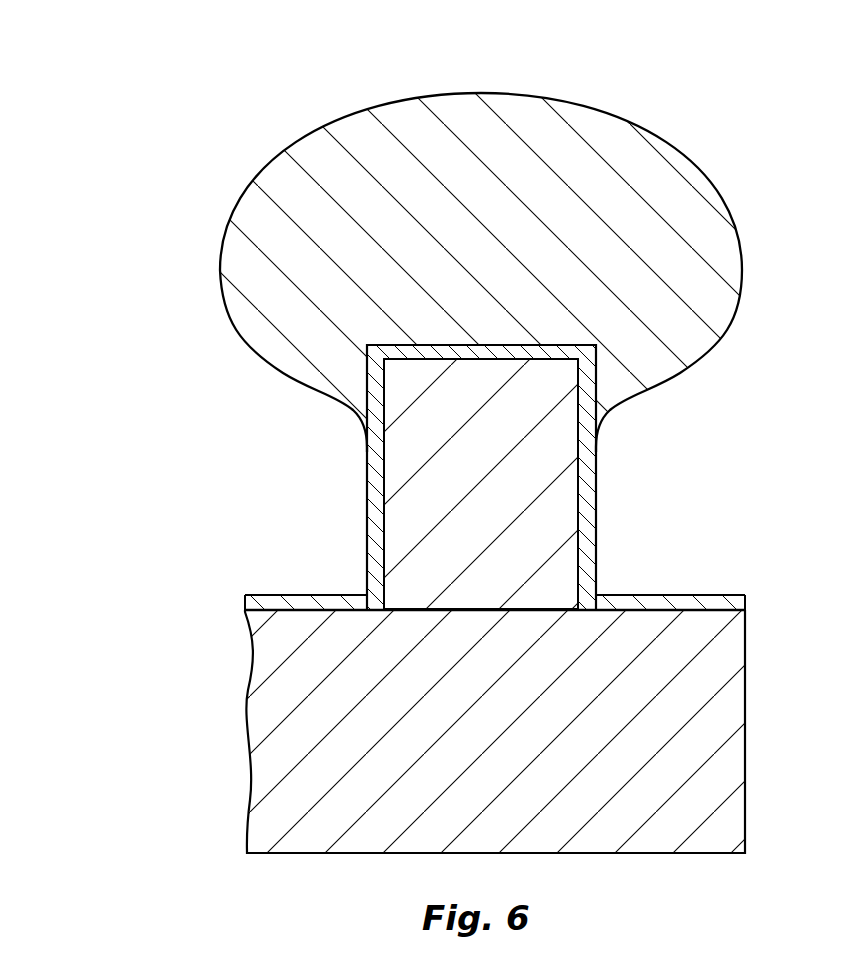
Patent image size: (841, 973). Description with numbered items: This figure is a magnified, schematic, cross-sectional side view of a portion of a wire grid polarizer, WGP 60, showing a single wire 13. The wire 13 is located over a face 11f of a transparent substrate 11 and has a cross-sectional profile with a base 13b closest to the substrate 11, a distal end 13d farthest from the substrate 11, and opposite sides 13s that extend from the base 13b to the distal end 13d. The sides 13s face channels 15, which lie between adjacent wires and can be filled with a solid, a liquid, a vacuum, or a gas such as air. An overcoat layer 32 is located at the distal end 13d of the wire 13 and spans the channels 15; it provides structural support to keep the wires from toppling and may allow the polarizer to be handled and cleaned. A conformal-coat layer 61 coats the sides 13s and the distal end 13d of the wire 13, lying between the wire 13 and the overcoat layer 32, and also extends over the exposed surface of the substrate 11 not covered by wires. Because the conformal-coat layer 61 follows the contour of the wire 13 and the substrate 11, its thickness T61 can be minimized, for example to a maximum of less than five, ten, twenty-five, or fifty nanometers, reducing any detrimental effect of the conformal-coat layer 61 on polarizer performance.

The WGP 60 is at (96, 227).
The overcoat layer 32 is at (481, 272).
The conformal-coat layer 61 is at (587, 533).
The wire 13 is at (481, 484).
The distal end 13d is at (485, 359).
The sides 13s is at (576, 518).
The base 13b is at (462, 609).
The channels 15 is at (458, 495).
The face 11f is at (302, 610).
The conformal-coat layer thickness T61 is at (717, 615).
The transparent substrate 11 is at (387, 711).